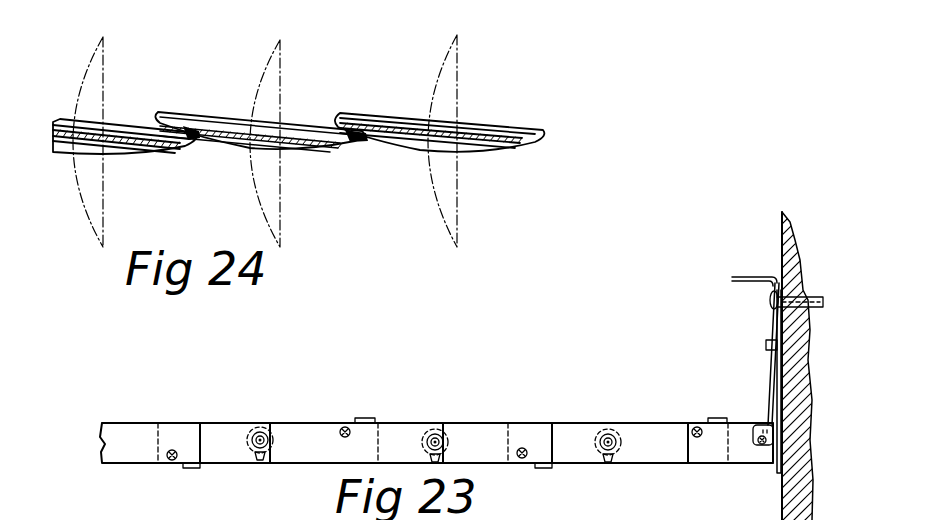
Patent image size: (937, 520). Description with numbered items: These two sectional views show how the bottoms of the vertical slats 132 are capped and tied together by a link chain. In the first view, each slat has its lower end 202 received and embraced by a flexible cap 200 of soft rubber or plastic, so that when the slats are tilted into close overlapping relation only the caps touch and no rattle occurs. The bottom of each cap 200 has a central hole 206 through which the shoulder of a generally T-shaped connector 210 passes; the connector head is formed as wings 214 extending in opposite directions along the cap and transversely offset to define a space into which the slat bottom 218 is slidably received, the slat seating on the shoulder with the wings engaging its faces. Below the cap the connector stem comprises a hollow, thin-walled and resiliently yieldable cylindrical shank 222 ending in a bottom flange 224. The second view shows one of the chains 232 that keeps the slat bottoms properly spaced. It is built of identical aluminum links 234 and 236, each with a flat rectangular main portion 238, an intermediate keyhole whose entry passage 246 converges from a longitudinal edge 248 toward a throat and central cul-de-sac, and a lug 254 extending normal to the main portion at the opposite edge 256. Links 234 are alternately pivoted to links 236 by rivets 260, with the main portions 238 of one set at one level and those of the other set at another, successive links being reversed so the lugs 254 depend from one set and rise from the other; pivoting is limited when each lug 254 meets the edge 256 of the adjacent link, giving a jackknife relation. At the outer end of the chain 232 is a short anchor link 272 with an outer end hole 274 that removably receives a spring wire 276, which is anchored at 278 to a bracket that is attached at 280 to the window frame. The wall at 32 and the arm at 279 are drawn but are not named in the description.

In FIG. 23, the wall 32 is at (782, 232).
In FIG. 24, the slat 132 is at (200, 124).
In FIG. 24, the flexible cap 200 is at (350, 128).
In FIG. 24, the lower end of slat 202 is at (372, 138).
In FIG. 24, the central hole 206 is at (333, 123).
In FIG. 24, the T-shaped connector 210 is at (238, 121).
In FIG. 24, the wings 214 is at (223, 119).
In FIG. 24, the slat bottom 218 is at (273, 132).
In FIG. 23, the shank 222 is at (260, 427).
In FIG. 23, the bottom flange 224 is at (262, 458).
In FIG. 23, the chain 232 is at (567, 414).
In FIG. 23, the link 234 is at (317, 375).
In FIG. 23, the link 236 is at (133, 418).
In FIG. 23, the main portion 238 is at (312, 428).
In FIG. 23, the entry passage 246 is at (258, 452).
In FIG. 23, the longitudinal edge 248 is at (295, 463).
In FIG. 23, the lug 254 is at (377, 421).
In FIG. 23, the opposite edge 256 is at (230, 397).
In FIG. 23, the rivet 260 is at (177, 455).
In FIG. 23, the anchor link 272 is at (706, 455).
In FIG. 23, the outer end hole 274 is at (760, 403).
In FIG. 23, the spring wire 276 is at (770, 378).
In FIG. 23, the anchoring point 278 is at (767, 345).
In FIG. 23, the bracket arm 279 is at (737, 272).
In FIG. 23, the bracket attachment 280 is at (810, 297).